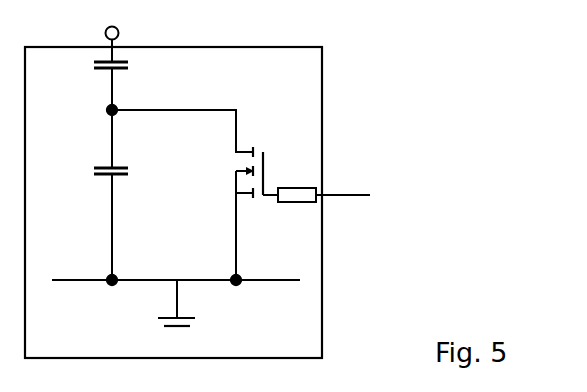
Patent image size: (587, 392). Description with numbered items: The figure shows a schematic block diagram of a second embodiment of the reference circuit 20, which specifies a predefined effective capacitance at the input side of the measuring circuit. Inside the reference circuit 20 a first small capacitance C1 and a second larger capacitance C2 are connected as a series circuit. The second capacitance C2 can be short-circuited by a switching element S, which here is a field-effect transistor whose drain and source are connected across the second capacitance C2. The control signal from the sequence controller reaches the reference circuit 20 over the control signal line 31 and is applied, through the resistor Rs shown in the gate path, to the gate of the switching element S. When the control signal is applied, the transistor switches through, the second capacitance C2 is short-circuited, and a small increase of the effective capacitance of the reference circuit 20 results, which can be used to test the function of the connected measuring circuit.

The reference circuit 20 is at (312, 63).
The control signal line 31 is at (335, 195).
The first small capacitance C1 is at (127, 66).
The second larger capacitance C2 is at (126, 172).
The switching element S is at (257, 160).
The series resistor Rs is at (297, 208).